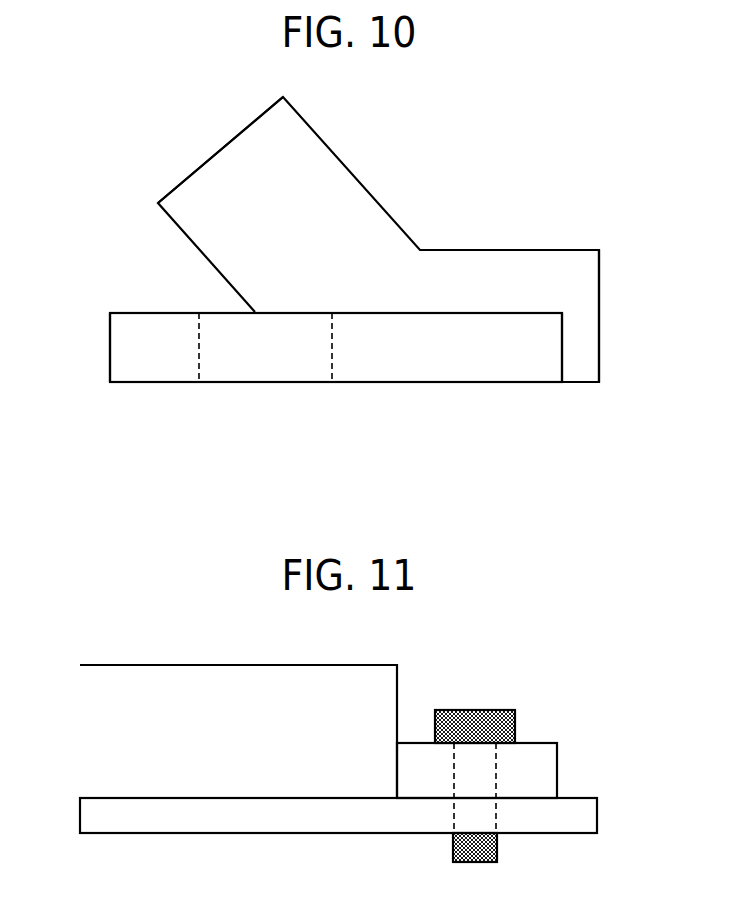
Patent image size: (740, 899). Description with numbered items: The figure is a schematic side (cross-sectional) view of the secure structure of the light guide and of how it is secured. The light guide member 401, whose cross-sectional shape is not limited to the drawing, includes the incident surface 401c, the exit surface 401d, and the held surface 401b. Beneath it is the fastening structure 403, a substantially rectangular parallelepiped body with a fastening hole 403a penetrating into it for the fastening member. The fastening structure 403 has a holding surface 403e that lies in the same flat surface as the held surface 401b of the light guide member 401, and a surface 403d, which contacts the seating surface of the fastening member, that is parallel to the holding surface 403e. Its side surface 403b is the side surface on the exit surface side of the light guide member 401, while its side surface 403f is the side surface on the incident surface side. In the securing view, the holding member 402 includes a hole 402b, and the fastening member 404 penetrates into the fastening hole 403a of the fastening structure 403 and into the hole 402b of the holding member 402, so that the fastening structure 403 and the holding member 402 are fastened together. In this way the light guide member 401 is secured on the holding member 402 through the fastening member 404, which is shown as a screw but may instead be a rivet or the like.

In FIG. 10, the light guide member 401 is at (447, 267).
In FIG. 11, the light guide member 401 is at (172, 688).
In FIG. 10, the held surface 401b is at (377, 384).
In FIG. 10, the incident surface 401c is at (583, 293).
In FIG. 10, the exit surface 401d is at (220, 151).
In FIG. 11, the holding member 402 is at (335, 826).
In FIG. 11, the hole 402b is at (490, 815).
In FIG. 10, the fastening structure 403 is at (153, 328).
In FIG. 11, the fastening structure 403 is at (548, 770).
In FIG. 10, the fastening hole 403a is at (263, 372).
In FIG. 11, the fastening hole 403a is at (487, 770).
In FIG. 10, the side surface 403b is at (110, 348).
In FIG. 10, the surface 403d is at (497, 311).
In FIG. 10, the holding surface 403e is at (522, 384).
In FIG. 10, the side surface 403f is at (565, 346).
In FIG. 11, the fastening member 404 is at (487, 708).